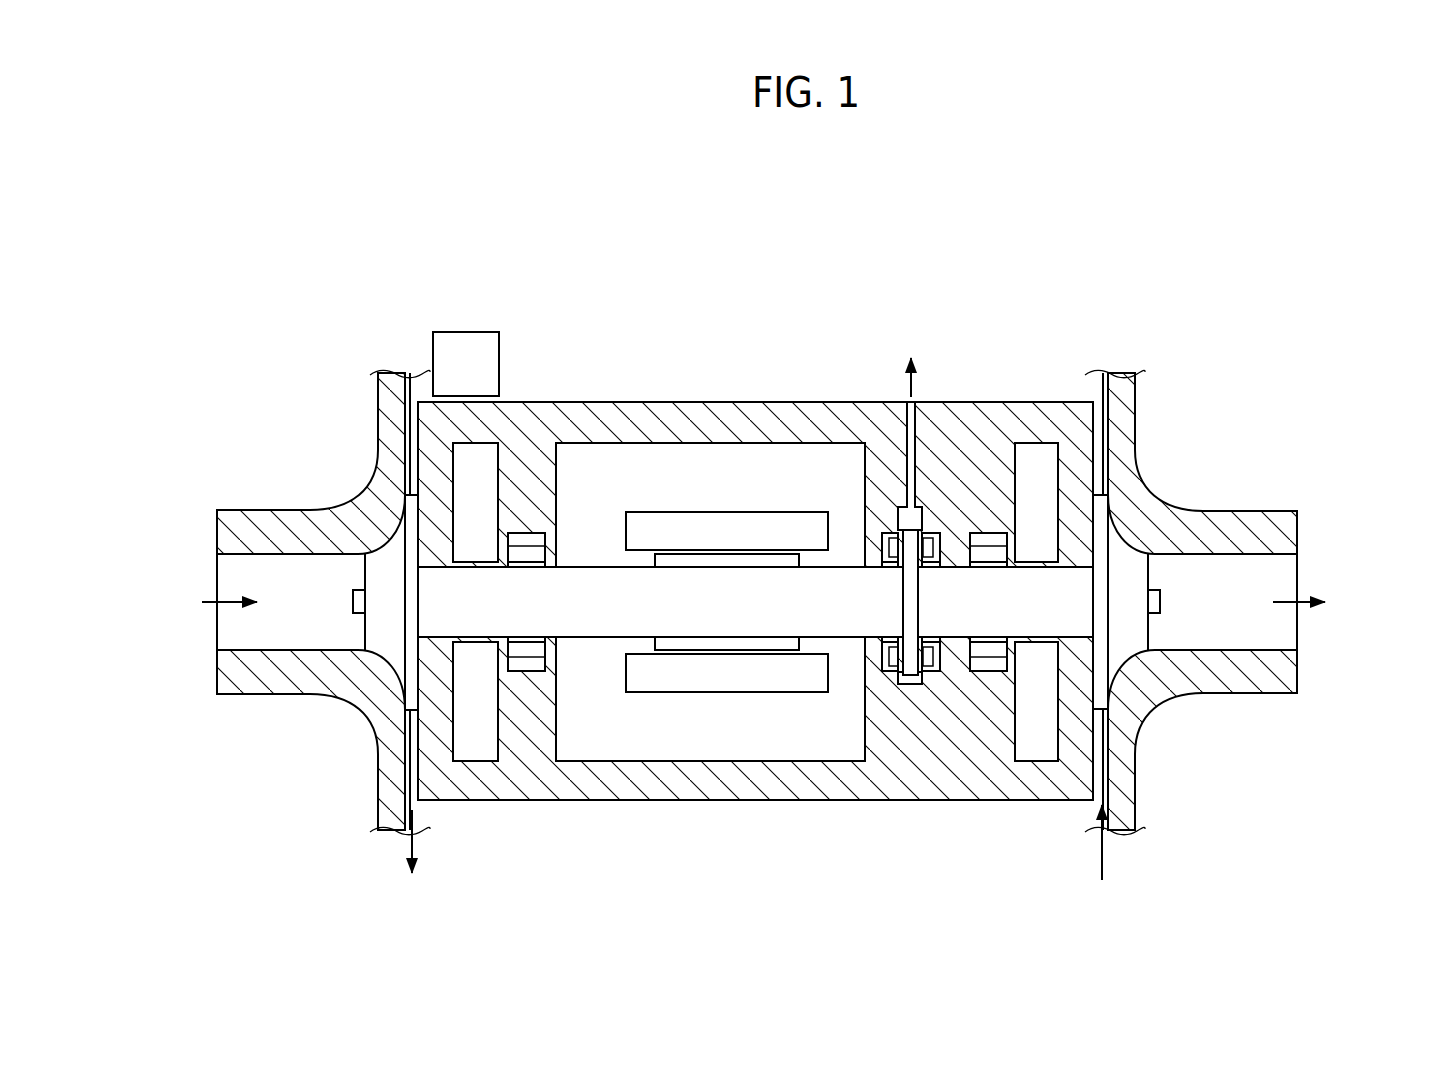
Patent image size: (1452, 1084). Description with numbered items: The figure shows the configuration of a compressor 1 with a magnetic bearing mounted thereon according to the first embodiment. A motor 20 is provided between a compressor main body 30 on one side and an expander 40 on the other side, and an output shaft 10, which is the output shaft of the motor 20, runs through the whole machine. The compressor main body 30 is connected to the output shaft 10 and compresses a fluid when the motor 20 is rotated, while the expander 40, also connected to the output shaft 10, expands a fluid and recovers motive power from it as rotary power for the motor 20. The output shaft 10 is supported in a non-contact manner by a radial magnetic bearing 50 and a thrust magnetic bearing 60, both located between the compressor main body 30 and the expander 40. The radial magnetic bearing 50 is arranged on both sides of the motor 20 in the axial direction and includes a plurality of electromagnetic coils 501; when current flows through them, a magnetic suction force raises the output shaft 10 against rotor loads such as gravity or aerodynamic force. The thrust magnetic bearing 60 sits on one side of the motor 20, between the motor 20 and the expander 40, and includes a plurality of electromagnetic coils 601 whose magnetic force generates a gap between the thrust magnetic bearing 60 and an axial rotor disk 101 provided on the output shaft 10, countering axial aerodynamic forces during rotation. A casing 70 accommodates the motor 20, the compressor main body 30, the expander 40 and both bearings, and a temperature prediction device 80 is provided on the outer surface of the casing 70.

The compressor with a magnetic bearing mounted thereon 1 is at (1182, 352).
The output shaft 10 is at (597, 620).
The motor 20 is at (755, 368).
The compressor main body 30 is at (335, 392).
The expander 40 is at (1227, 432).
The radial magnetic bearing 50 is at (534, 662).
The electromagnetic coil 501 is at (521, 535).
The thrust magnetic bearing 60 is at (896, 668).
The electromagnetic coil 601 is at (882, 540).
The casing 70 is at (627, 410).
The temperature prediction device 80 is at (468, 332).
The axial rotor disk 101 is at (910, 677).